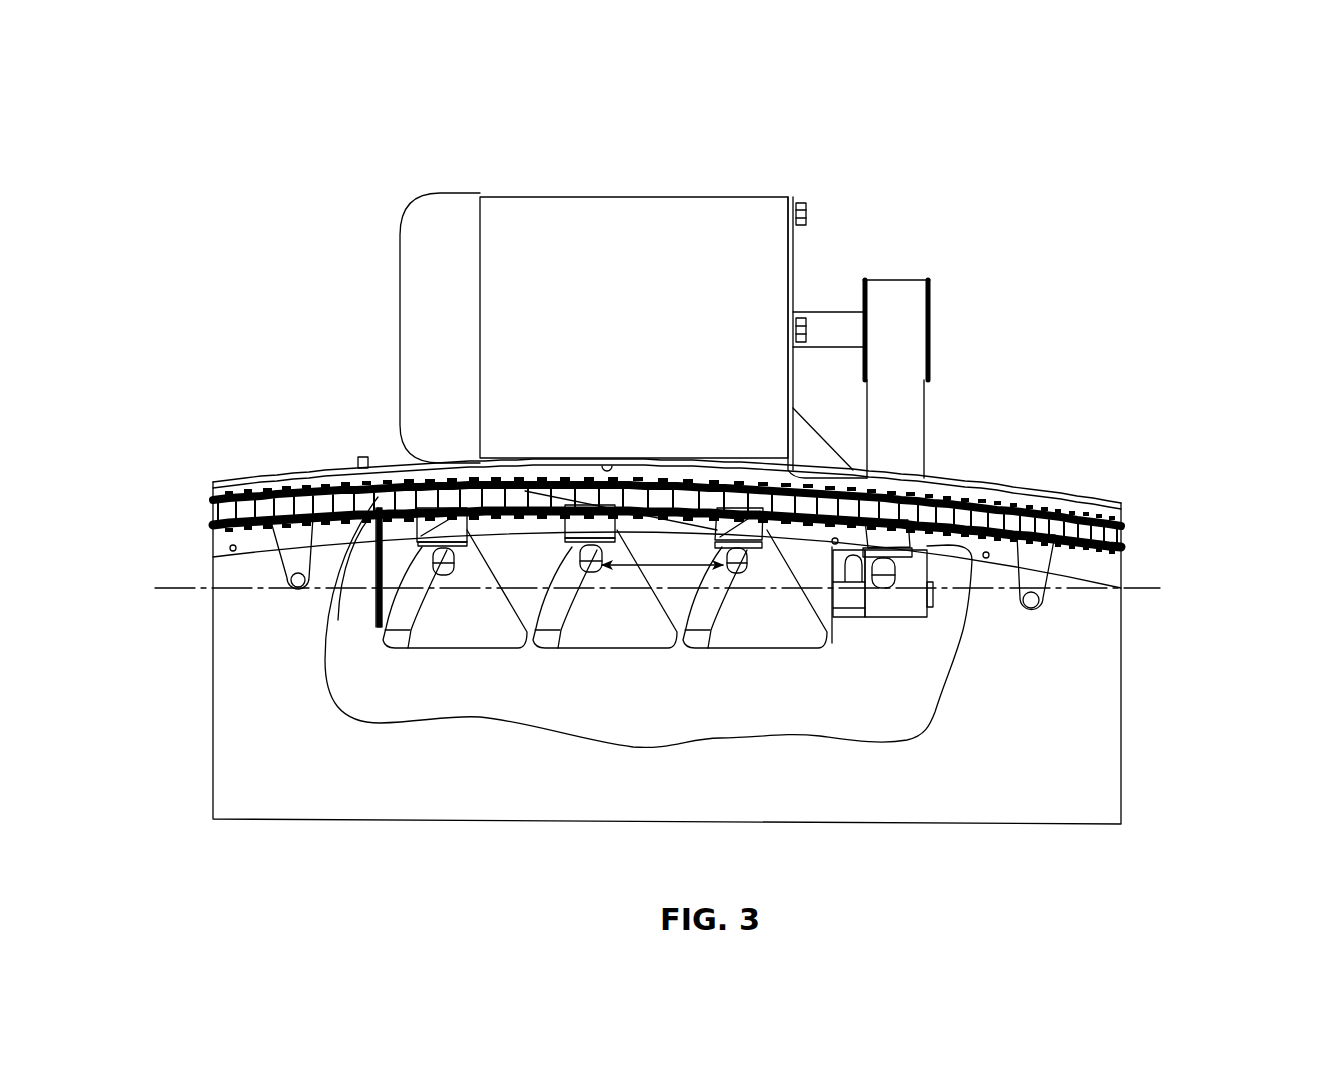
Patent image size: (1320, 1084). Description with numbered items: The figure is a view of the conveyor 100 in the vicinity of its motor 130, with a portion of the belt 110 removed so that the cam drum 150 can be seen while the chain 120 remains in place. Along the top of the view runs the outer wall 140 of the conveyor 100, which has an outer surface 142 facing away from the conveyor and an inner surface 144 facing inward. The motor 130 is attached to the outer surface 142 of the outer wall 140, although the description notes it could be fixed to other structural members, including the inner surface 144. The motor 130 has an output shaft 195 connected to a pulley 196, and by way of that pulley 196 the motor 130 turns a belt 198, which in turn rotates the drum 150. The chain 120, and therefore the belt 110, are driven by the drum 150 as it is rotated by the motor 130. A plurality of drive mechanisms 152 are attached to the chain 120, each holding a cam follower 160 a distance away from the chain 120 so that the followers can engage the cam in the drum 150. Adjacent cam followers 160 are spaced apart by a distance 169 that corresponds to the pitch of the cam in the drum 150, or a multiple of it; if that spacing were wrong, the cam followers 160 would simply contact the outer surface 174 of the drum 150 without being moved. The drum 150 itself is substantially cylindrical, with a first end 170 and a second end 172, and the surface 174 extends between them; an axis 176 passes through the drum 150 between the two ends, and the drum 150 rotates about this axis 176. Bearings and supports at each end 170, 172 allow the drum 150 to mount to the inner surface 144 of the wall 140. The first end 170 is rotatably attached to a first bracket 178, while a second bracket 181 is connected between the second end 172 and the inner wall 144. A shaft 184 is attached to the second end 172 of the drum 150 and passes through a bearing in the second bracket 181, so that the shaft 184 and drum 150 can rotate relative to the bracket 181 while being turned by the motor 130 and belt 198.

The conveyor 100 is at (1212, 158).
The belt 110 is at (1093, 712).
The chain 120 is at (1065, 520).
The motor 130 is at (748, 188).
The outer wall 140 is at (217, 478).
The outer surface 142 is at (260, 477).
The inner surface 144 is at (215, 500).
The drum 150 is at (763, 657).
The drive mechanism 152 is at (435, 512).
The cam follower 160 is at (1040, 603).
The distance 169 is at (660, 567).
The first end 170 is at (374, 628).
The second end 172 is at (833, 629).
The outer surface 174 is at (490, 620).
The axis 176 is at (175, 592).
The first bracket 178 is at (374, 600).
The second bracket 181 is at (838, 628).
The shaft 184 is at (850, 618).
The output shaft 195 is at (876, 252).
The pulley 196 is at (930, 330).
The belt 198 is at (928, 428).